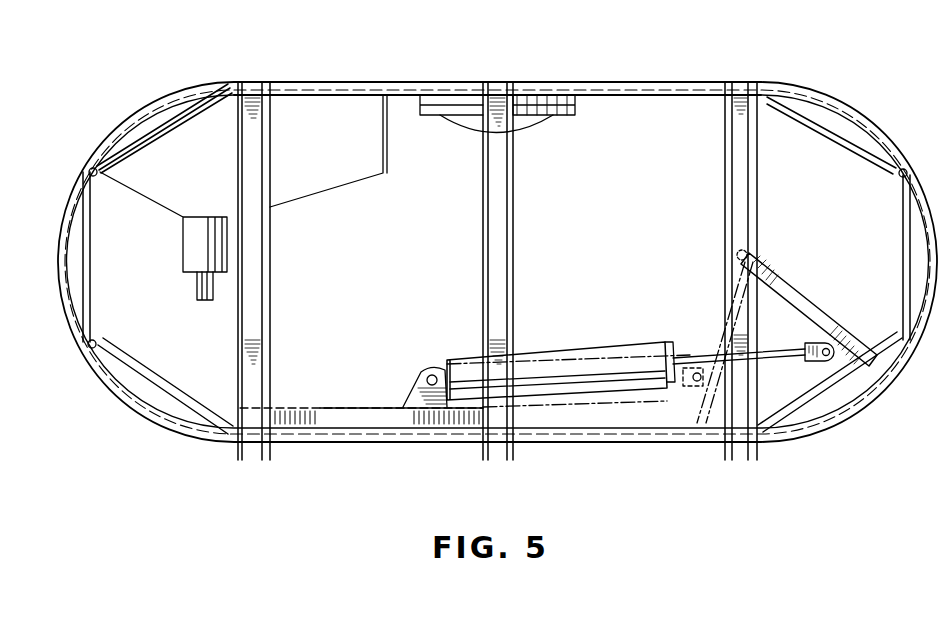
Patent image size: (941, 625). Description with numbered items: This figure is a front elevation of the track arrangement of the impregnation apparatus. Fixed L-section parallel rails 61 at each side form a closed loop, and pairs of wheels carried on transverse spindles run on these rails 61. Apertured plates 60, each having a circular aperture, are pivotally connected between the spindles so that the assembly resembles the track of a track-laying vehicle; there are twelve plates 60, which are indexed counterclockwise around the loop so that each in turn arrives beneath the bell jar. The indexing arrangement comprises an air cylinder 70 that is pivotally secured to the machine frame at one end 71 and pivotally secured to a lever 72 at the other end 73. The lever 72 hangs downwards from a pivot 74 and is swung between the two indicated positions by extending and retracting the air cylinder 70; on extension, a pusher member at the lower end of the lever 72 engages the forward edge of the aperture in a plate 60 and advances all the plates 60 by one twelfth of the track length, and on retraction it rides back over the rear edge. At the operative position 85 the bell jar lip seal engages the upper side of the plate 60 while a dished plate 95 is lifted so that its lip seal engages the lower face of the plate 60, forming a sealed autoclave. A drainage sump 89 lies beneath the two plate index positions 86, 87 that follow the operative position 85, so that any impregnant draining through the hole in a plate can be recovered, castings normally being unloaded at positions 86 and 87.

The apertured plate 60 is at (657, 83).
The rail 61 is at (884, 373).
The air cylinder 70 is at (598, 367).
The frame pivot end 71 is at (427, 378).
The lever 72 is at (813, 303).
The lever pivot end 73 is at (820, 363).
The pivot 74 is at (742, 250).
The operative position 85 is at (550, 77).
The plate index position 86 is at (318, 77).
The plate index position 87 is at (116, 116).
The drainage sump 89 is at (337, 188).
The dished plate 95 is at (549, 117).